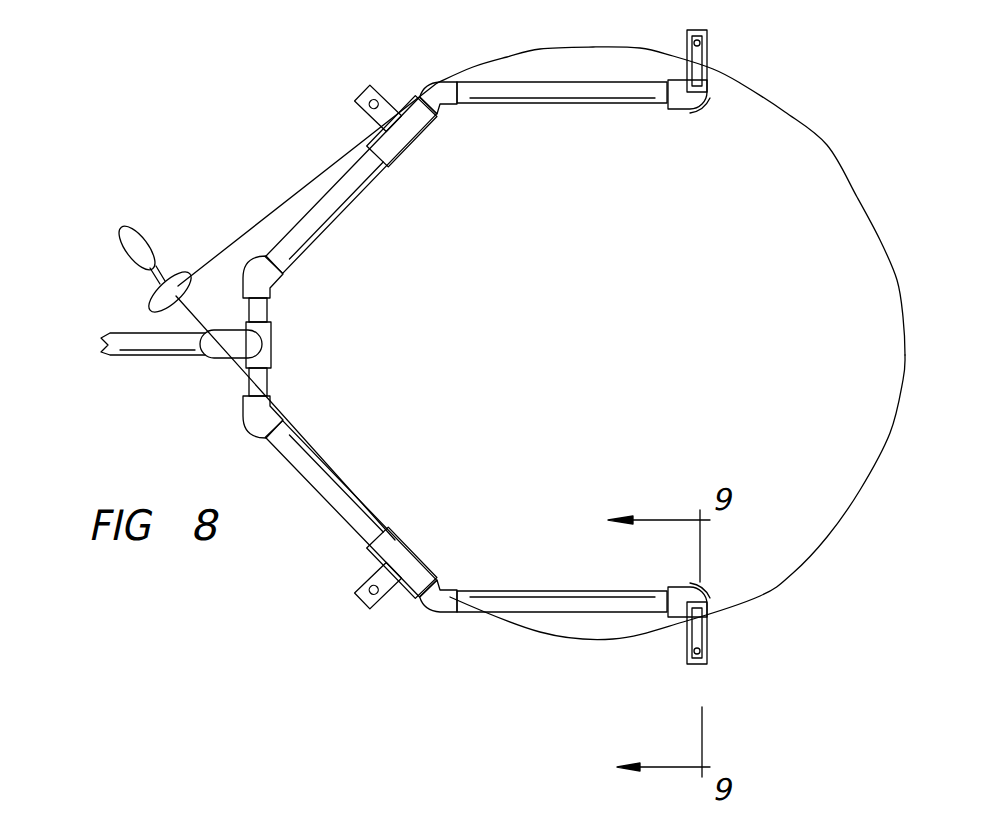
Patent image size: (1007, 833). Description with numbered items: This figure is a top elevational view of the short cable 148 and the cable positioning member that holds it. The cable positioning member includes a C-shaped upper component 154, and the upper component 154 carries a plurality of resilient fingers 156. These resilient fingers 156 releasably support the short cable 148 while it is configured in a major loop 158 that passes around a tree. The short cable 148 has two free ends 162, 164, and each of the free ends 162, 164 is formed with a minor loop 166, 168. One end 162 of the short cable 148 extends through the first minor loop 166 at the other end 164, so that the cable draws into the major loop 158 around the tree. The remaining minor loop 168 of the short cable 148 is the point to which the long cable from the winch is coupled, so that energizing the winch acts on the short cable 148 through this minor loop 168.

The short cable 148 is at (825, 146).
The C-shaped upper component 154 is at (437, 84).
The resilient fingers 156 is at (697, 108).
The major loop 158 is at (787, 582).
The free end 162 is at (192, 276).
The other end 164 is at (148, 275).
The first minor loop 166 is at (162, 305).
The minor loop 168 is at (130, 226).